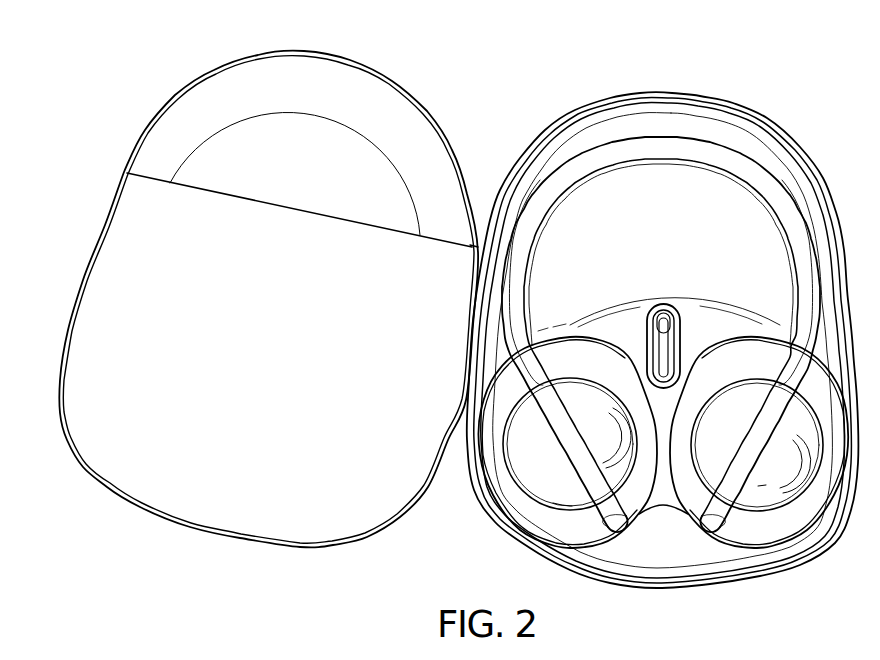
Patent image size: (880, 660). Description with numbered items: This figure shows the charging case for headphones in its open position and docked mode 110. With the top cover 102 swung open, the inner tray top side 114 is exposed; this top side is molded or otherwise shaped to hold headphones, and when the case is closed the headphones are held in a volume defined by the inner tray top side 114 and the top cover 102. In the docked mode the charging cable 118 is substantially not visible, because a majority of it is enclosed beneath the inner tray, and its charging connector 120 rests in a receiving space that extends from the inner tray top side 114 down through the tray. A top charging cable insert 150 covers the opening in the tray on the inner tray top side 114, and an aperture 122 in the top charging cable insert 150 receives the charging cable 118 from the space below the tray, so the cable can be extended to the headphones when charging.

The open position and docked mode 110 is at (447, 294).
The top cover 102 is at (104, 229).
The inner tray top side 114 is at (684, 205).
The charging cable 118 is at (673, 329).
The charging connector 120 is at (663, 350).
The aperture 122 is at (661, 308).
The top charging cable insert 150 is at (654, 329).